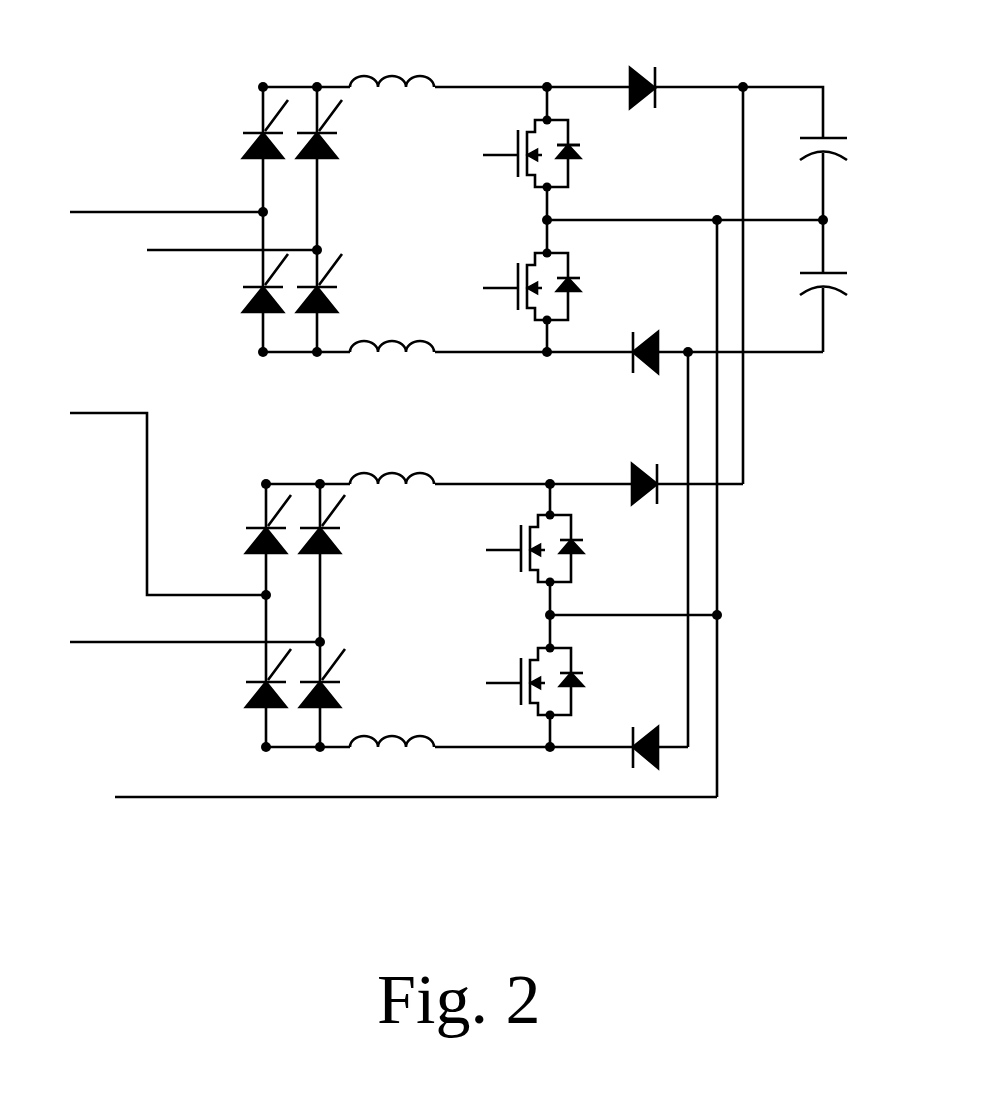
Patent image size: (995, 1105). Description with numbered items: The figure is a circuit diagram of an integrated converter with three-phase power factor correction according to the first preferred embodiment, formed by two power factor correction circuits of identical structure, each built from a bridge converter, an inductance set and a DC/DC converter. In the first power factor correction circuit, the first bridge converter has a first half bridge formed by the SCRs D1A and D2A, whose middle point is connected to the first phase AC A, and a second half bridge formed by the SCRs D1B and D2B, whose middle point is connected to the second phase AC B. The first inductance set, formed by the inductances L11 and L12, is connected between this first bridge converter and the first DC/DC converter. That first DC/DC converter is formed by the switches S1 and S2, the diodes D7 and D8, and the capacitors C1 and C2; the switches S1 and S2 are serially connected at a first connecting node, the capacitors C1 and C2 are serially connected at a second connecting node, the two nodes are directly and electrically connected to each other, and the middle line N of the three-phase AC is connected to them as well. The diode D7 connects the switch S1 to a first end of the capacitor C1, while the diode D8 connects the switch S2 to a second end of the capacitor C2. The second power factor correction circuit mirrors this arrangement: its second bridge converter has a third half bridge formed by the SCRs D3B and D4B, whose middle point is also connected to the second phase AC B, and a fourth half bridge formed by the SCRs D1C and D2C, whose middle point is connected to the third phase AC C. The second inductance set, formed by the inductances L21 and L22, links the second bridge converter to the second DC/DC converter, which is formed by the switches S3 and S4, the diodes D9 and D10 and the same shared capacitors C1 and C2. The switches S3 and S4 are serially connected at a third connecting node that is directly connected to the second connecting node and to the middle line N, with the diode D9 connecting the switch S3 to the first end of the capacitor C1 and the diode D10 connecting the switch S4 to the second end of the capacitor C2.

The first phase AC A is at (155, 181).
The second phase AC B is at (179, 422).
The third phase AC C is at (187, 611).
The middle line N is at (398, 769).
The SCR D1A is at (231, 139).
The SCR D1B is at (349, 139).
The SCR D2A is at (231, 291).
The SCR D2B is at (349, 291).
The SCR D3B is at (233, 528).
The SCR D1C is at (352, 538).
The SCR D4B is at (233, 680).
The SCR D2C is at (352, 678).
The inductance L11 is at (392, 63).
The inductance L12 is at (392, 372).
The inductance L21 is at (392, 461).
The inductance L22 is at (392, 765).
The switch S1 is at (517, 152).
The switch S2 is at (521, 281).
The switch S3 is at (525, 548).
The switch S4 is at (526, 681).
The diode D7 is at (620, 71).
The diode D8 is at (634, 325).
The diode D9 is at (627, 459).
The diode D10 is at (629, 721).
The capacitor C1 is at (854, 144).
The capacitor C2 is at (854, 287).